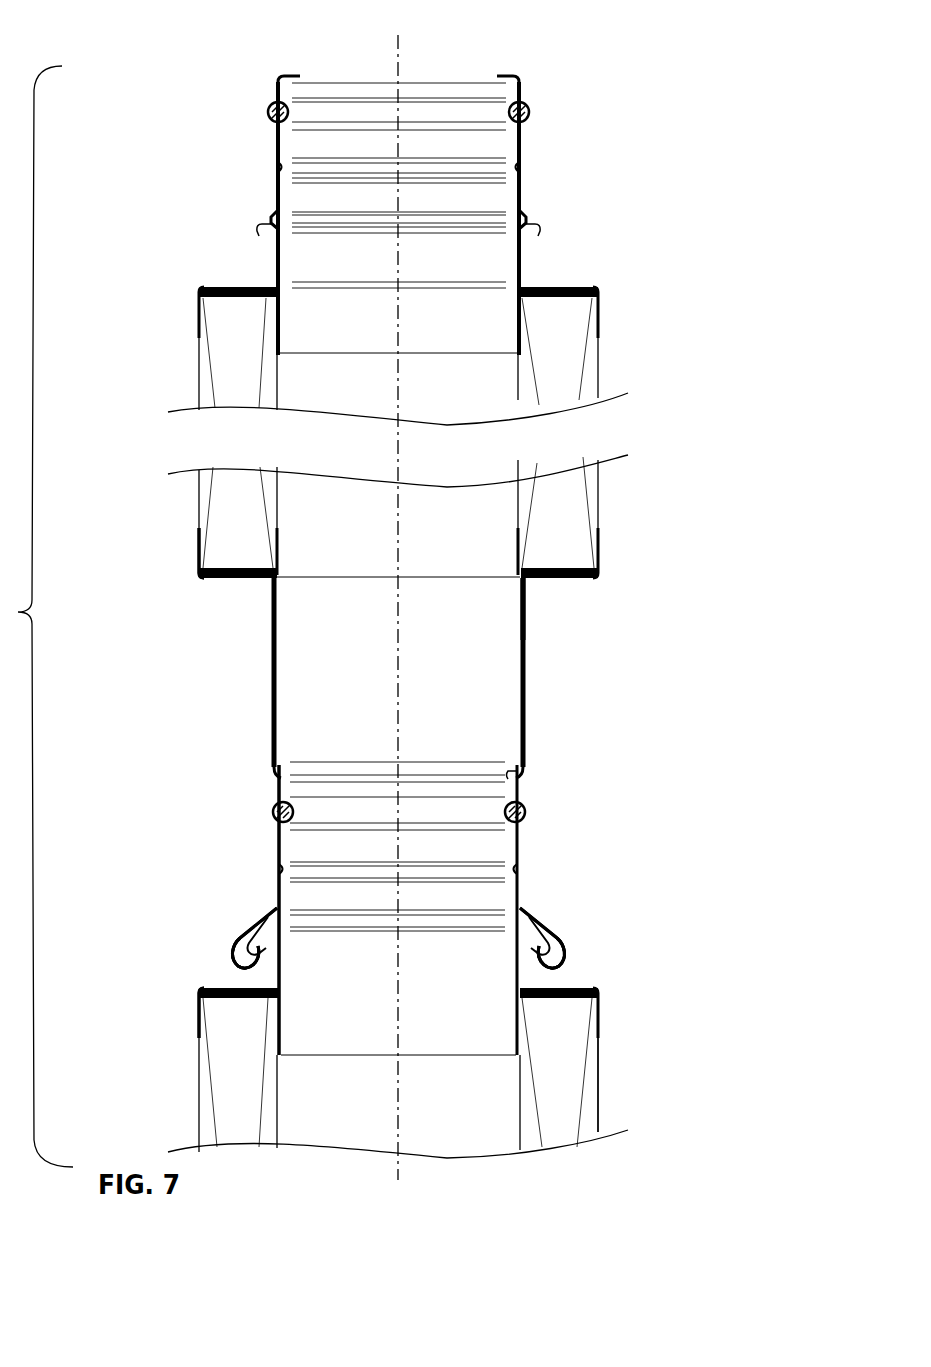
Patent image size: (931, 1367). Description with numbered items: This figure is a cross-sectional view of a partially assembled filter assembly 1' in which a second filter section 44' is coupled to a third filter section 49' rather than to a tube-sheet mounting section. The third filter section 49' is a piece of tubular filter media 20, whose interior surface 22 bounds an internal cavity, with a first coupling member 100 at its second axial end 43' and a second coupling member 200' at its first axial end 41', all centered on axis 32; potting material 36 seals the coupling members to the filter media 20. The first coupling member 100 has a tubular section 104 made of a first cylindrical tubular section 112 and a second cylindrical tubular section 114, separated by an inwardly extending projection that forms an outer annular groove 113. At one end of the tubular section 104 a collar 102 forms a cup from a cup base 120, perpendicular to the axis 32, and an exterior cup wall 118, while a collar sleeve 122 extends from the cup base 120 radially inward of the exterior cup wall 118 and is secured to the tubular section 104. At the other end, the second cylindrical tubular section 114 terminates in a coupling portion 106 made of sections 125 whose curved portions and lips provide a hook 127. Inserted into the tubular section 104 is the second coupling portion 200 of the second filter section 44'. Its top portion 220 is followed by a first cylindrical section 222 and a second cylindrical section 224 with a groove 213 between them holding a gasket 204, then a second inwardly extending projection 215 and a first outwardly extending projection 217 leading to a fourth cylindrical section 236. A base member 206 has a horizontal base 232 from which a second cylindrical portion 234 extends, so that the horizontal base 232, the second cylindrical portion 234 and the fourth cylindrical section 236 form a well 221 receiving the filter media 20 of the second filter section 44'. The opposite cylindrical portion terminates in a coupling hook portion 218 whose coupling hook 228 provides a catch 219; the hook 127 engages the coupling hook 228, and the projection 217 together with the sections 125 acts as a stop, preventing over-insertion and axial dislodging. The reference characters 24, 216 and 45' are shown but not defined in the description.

The axis 32 is at (401, 48).
The filter assembly 1' is at (36, 616).
The second coupling member 200' is at (450, 215).
The coupling flange 24 is at (589, 284).
The first axial end 41' is at (180, 302).
The third filter section 49' is at (176, 354).
The potting material 36 is at (567, 298).
The filter media 20 is at (589, 374).
The interior surface 22 is at (279, 389).
The cup base 120 is at (226, 573).
The exterior cup wall 118 is at (200, 545).
The collar 102 is at (148, 548).
The second axial end 43' is at (145, 574).
The tubular section 104 is at (630, 638).
The collar sleeve 122 is at (527, 602).
The first cylindrical tubular section 112 is at (526, 664).
The outer annular groove 113 is at (524, 773).
The second coupling portion 200 is at (392, 979).
The second cylindrical tubular section 114 is at (526, 832).
The first coupling portion 100 is at (232, 785).
The gasket 204 is at (525, 812).
The top portion 220 is at (283, 777).
The first cylindrical section 222 is at (282, 793).
The second cylindrical section 224 is at (517, 843).
The groove 213 is at (503, 813).
The pipe shoulder 216 is at (527, 840).
The second inwardly extending projection 215 is at (527, 866).
The coupling hook portion 218 is at (260, 922).
The first outwardly extending projection 217 is at (524, 912).
The coupling portion 106 is at (230, 923).
The coupling hook 228 is at (531, 934).
The section 125 is at (241, 944).
The hook 127 is at (250, 950).
The catch 219 is at (546, 963).
The end of second coupling 45' is at (630, 953).
The base member 206 is at (166, 990).
The second filter section 44' is at (140, 1009).
The horizontal base 232 is at (576, 998).
The second cylindrical portion 234 is at (596, 1034).
The fourth cylindrical section 236 is at (522, 1036).
The well 221 is at (565, 1058).